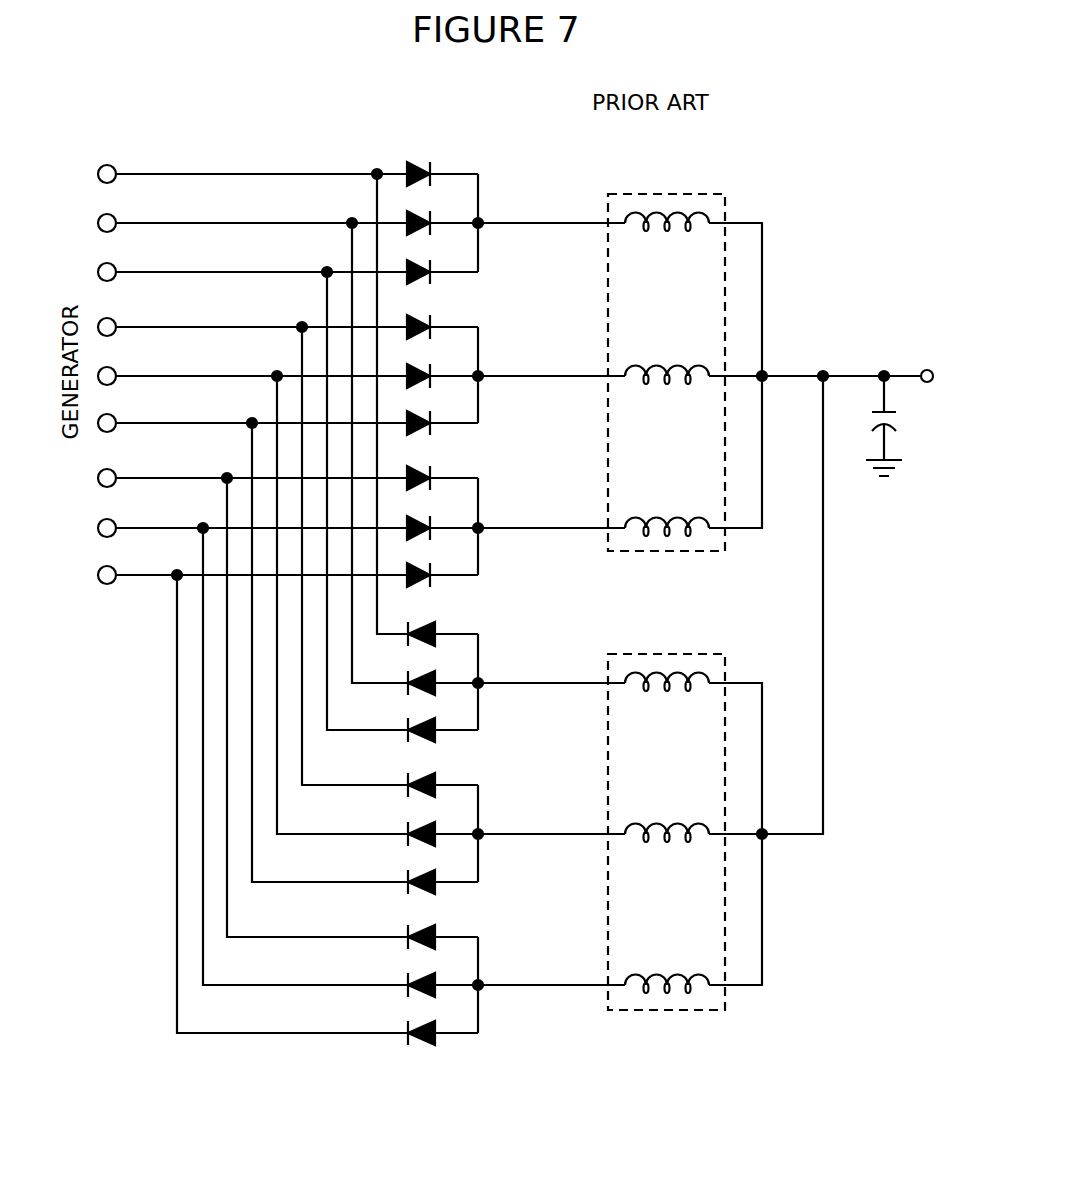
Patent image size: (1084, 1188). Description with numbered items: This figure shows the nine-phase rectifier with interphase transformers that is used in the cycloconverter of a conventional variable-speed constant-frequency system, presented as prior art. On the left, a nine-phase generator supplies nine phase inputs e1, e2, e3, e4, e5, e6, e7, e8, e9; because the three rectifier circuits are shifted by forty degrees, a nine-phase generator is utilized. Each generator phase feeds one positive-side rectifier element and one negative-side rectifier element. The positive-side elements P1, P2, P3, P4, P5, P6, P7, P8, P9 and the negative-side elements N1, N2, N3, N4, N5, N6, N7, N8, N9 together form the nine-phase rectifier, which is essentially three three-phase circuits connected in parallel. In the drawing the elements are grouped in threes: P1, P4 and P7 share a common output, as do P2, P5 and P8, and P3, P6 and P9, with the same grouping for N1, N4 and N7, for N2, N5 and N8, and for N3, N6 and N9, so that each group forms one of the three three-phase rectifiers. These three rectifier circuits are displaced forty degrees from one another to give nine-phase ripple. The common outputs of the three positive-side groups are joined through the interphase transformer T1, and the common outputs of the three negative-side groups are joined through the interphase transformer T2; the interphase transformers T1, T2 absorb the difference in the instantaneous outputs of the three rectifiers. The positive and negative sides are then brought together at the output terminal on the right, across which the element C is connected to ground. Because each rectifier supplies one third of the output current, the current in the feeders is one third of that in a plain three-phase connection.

The generator phase voltage e1 is at (253, 390).
The generator phase voltage e2 is at (253, 542).
The generator phase voltage e3 is at (253, 693).
The generator phase voltage e4 is at (253, 439).
The generator phase voltage e5 is at (253, 591).
The generator phase voltage e6 is at (253, 742).
The generator phase voltage e7 is at (253, 487).
The generator phase voltage e8 is at (253, 638).
The generator phase voltage e9 is at (253, 790).
The 9-phase rectifier P1 is at (442, 168).
The 9-phase rectifier P2 is at (442, 321).
The 9-phase rectifier P3 is at (442, 472).
The 9-phase rectifier P4 is at (442, 217).
The 9-phase rectifier P5 is at (442, 370).
The 9-phase rectifier P6 is at (442, 522).
The 9-phase rectifier P7 is at (442, 266).
The 9-phase rectifier P8 is at (442, 417).
The 9-phase rectifier P9 is at (442, 569).
The 9-phase rectifier N1 is at (443, 627).
The 9-phase rectifier N2 is at (443, 778).
The 9-phase rectifier N3 is at (443, 930).
The 9-phase rectifier N4 is at (443, 676).
The 9-phase rectifier N5 is at (443, 827).
The 9-phase rectifier N6 is at (443, 978).
The 9-phase rectifier N7 is at (443, 723).
The 9-phase rectifier N8 is at (443, 875).
The 9-phase rectifier N9 is at (443, 1026).
The interphase transformer T1 is at (666, 359).
The interphase transformer T2 is at (666, 818).
The smoothing capacitor C is at (893, 426).